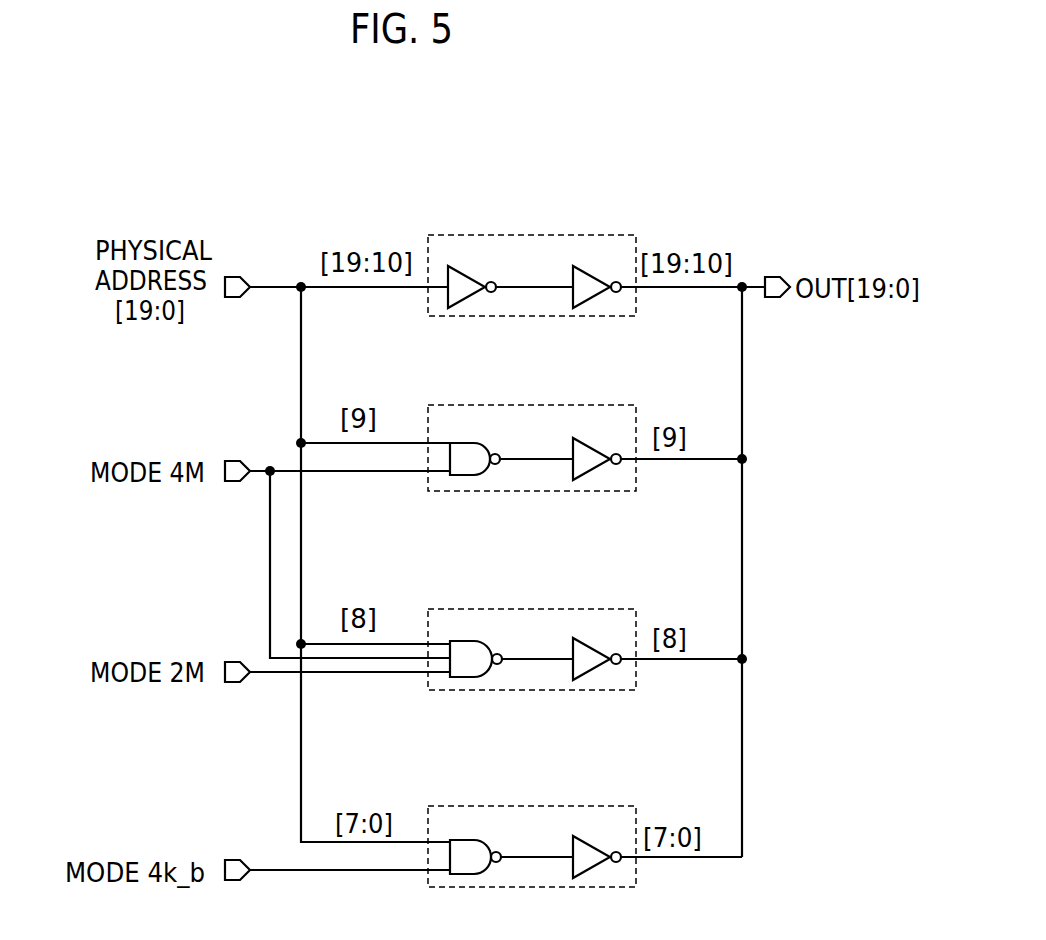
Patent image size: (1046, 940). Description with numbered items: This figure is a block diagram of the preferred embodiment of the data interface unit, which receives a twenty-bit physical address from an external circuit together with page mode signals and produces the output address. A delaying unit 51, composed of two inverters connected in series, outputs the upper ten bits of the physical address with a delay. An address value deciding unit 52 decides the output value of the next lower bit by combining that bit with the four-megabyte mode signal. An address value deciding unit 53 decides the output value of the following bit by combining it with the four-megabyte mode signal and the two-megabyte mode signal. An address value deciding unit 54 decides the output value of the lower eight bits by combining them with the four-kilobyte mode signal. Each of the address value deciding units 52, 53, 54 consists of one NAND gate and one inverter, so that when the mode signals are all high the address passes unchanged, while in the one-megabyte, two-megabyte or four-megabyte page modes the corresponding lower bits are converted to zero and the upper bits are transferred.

The delaying unit 51 is at (546, 234).
The address value deciding unit 52 is at (546, 404).
The address value deciding unit 53 is at (546, 608).
The address value deciding unit 54 is at (546, 805).